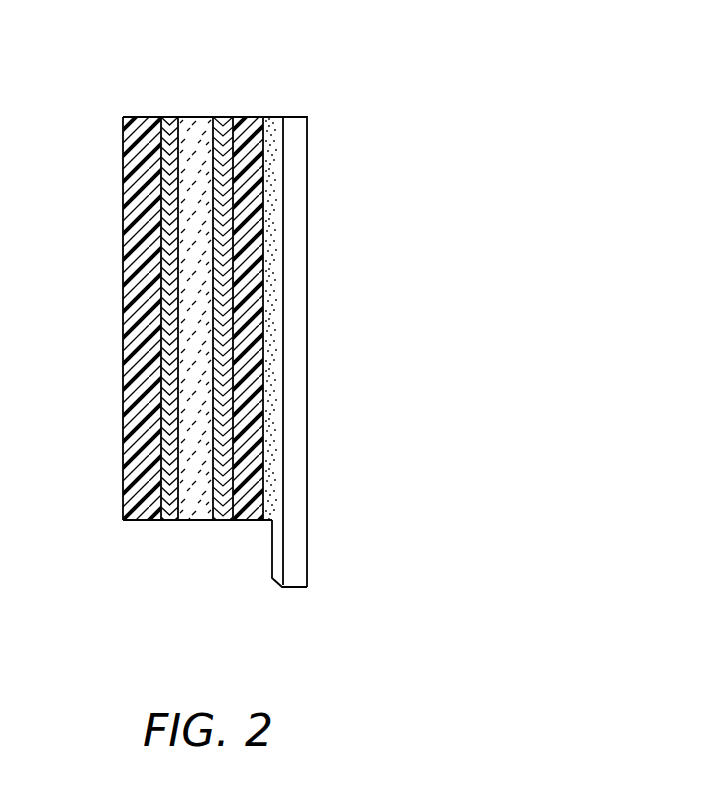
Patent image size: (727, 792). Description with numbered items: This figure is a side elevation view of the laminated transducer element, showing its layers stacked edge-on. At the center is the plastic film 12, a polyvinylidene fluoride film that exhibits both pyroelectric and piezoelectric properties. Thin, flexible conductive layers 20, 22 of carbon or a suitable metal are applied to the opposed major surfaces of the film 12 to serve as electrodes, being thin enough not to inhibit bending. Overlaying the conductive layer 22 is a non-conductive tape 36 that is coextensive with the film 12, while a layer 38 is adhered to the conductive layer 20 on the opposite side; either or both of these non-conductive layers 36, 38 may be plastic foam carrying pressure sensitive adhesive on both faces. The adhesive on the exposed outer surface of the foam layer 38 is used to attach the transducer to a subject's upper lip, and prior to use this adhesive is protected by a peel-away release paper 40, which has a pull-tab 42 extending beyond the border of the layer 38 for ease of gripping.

The non-conductive tape 36 is at (121, 212).
The conductive layer 22 is at (168, 117).
The plastic film 12 is at (192, 117).
The conductive layer 20 is at (222, 117).
The layer 38 is at (244, 117).
The release paper 40 is at (307, 322).
The pull-tab 42 is at (307, 572).